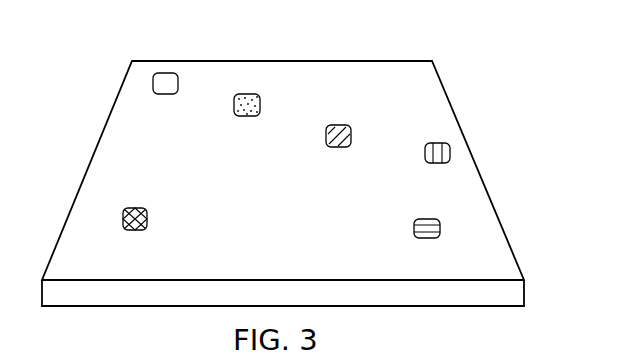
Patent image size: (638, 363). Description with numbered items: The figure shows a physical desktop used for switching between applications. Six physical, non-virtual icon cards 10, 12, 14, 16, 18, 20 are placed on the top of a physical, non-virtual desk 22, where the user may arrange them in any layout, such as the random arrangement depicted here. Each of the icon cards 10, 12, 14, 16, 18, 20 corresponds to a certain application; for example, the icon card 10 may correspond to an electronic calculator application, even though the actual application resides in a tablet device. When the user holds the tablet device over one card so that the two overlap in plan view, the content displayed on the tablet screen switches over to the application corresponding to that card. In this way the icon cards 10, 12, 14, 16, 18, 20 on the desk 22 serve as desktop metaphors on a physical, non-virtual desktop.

The icon card 10 is at (123, 214).
The icon card 12 is at (152, 78).
The icon card 14 is at (250, 94).
The icon card 16 is at (343, 124).
The icon card 18 is at (450, 146).
The icon card 20 is at (440, 222).
The desk 22 is at (237, 248).